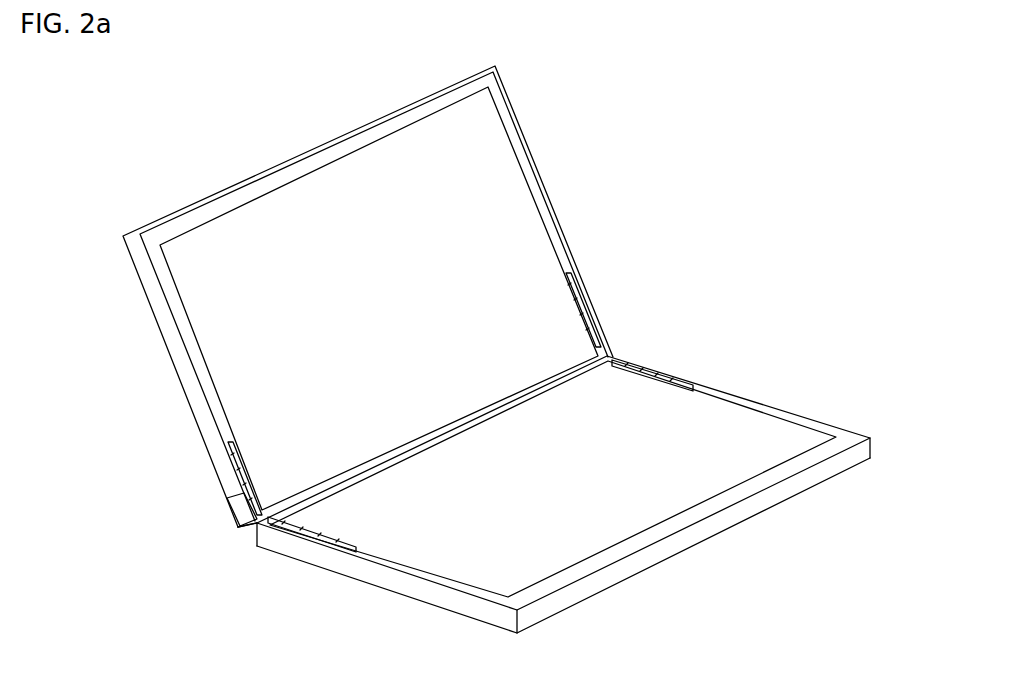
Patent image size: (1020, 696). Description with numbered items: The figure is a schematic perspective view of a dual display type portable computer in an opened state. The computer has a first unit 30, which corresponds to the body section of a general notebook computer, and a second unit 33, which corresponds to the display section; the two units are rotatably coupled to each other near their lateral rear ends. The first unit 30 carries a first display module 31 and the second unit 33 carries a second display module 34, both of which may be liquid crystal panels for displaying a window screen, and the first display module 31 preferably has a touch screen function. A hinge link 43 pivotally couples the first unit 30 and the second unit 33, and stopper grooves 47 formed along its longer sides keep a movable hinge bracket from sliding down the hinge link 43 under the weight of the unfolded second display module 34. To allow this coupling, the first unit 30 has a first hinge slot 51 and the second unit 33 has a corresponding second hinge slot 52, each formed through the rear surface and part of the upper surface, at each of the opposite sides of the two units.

The first unit 30 is at (750, 400).
The first display module 31 is at (640, 387).
The second unit 33 is at (562, 227).
The second display module 34 is at (500, 160).
The hinge link 43 is at (240, 527).
The stopper grooves 47 is at (228, 500).
The first hinge slot 51 is at (627, 355).
The second hinge slot 52 is at (588, 280).